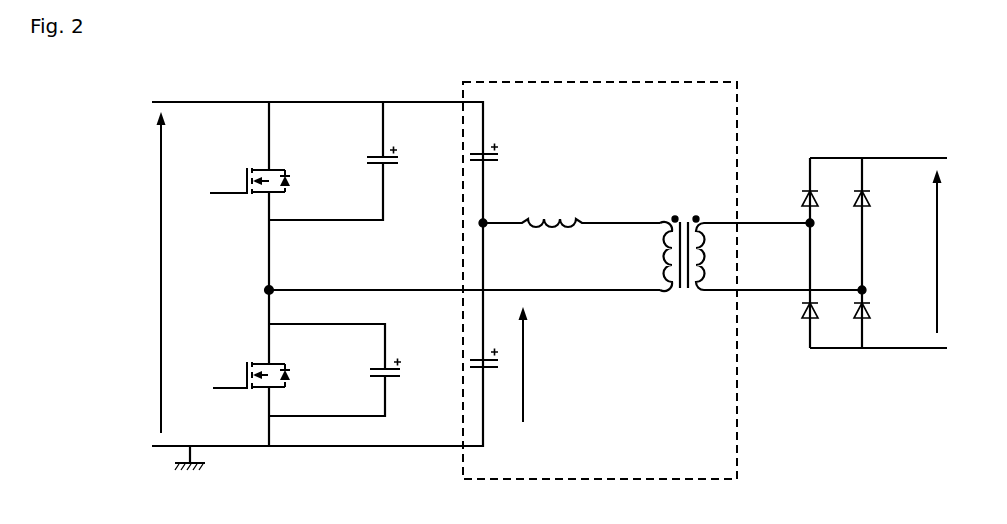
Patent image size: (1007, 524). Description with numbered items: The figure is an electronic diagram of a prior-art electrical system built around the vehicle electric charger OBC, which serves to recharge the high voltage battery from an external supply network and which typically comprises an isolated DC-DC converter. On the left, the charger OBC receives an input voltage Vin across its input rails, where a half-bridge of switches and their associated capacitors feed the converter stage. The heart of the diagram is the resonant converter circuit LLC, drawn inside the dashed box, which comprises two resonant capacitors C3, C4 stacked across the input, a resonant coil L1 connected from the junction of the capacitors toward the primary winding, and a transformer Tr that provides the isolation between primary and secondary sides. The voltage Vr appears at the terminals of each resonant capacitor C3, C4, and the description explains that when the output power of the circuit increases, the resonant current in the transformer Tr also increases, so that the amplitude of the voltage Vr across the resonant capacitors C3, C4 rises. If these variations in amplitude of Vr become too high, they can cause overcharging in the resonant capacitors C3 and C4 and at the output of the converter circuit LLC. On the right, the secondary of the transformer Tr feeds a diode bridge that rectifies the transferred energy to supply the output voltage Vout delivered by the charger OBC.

The electric charger OBC is at (133, 130).
The input voltage Vin is at (143, 272).
The resonant converter circuit LLC is at (600, 267).
The resonant capacitor C3 is at (487, 186).
The resonant capacitor C4 is at (487, 369).
The voltage at the terminals of each resonant capacitor Vr is at (534, 364).
The resonant coil L1 is at (571, 237).
The transformer Tr is at (761, 237).
The output voltage Vout is at (874, 253).